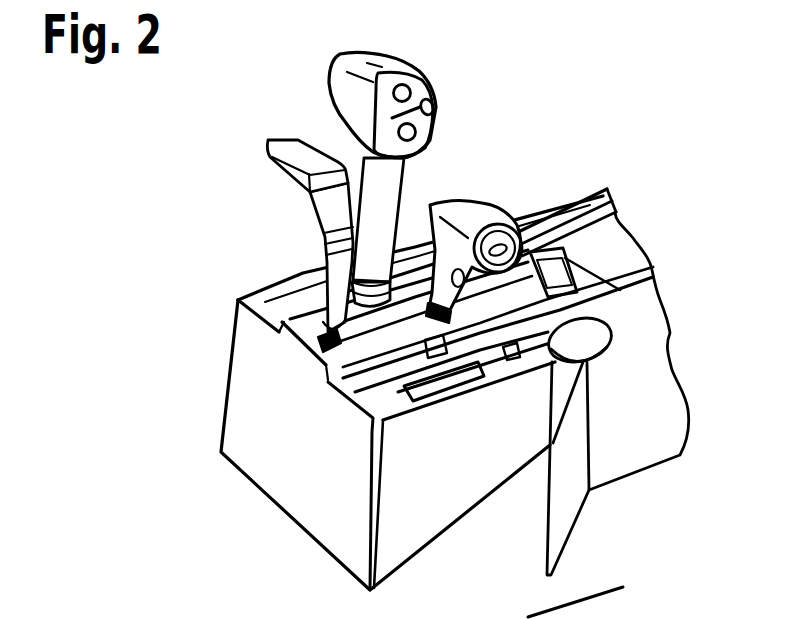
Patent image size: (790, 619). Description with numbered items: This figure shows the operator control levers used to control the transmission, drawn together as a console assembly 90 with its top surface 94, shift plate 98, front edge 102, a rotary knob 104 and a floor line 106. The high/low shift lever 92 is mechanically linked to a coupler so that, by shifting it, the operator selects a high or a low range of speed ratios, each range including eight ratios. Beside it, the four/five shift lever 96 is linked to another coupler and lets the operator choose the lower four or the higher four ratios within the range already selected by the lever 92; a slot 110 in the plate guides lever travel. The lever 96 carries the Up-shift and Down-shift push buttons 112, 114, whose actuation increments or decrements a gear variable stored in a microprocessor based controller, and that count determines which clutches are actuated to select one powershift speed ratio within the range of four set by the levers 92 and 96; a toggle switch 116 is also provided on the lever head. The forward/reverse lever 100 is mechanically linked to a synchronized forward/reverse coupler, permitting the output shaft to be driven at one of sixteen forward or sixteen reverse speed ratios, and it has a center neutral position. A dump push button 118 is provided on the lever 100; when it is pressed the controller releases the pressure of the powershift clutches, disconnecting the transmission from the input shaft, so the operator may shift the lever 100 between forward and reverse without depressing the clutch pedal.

The operator control console 90 is at (541, 207).
The high/low shift lever 92 is at (267, 136).
The console top surface 94 is at (303, 303).
The 4/5 shift lever 96 is at (357, 50).
The shift plate 98 is at (313, 347).
The forward/reverse lever 100 is at (460, 197).
The console front edge 102 is at (373, 410).
The rotary knob 104 is at (608, 350).
The floor line 106 is at (528, 617).
The lever slot 110 is at (467, 365).
The Up-shift push button 112 is at (403, 93).
The Down-shift push button 114 is at (408, 132).
The toggle switch 116 is at (392, 118).
The dump push button 118 is at (603, 226).